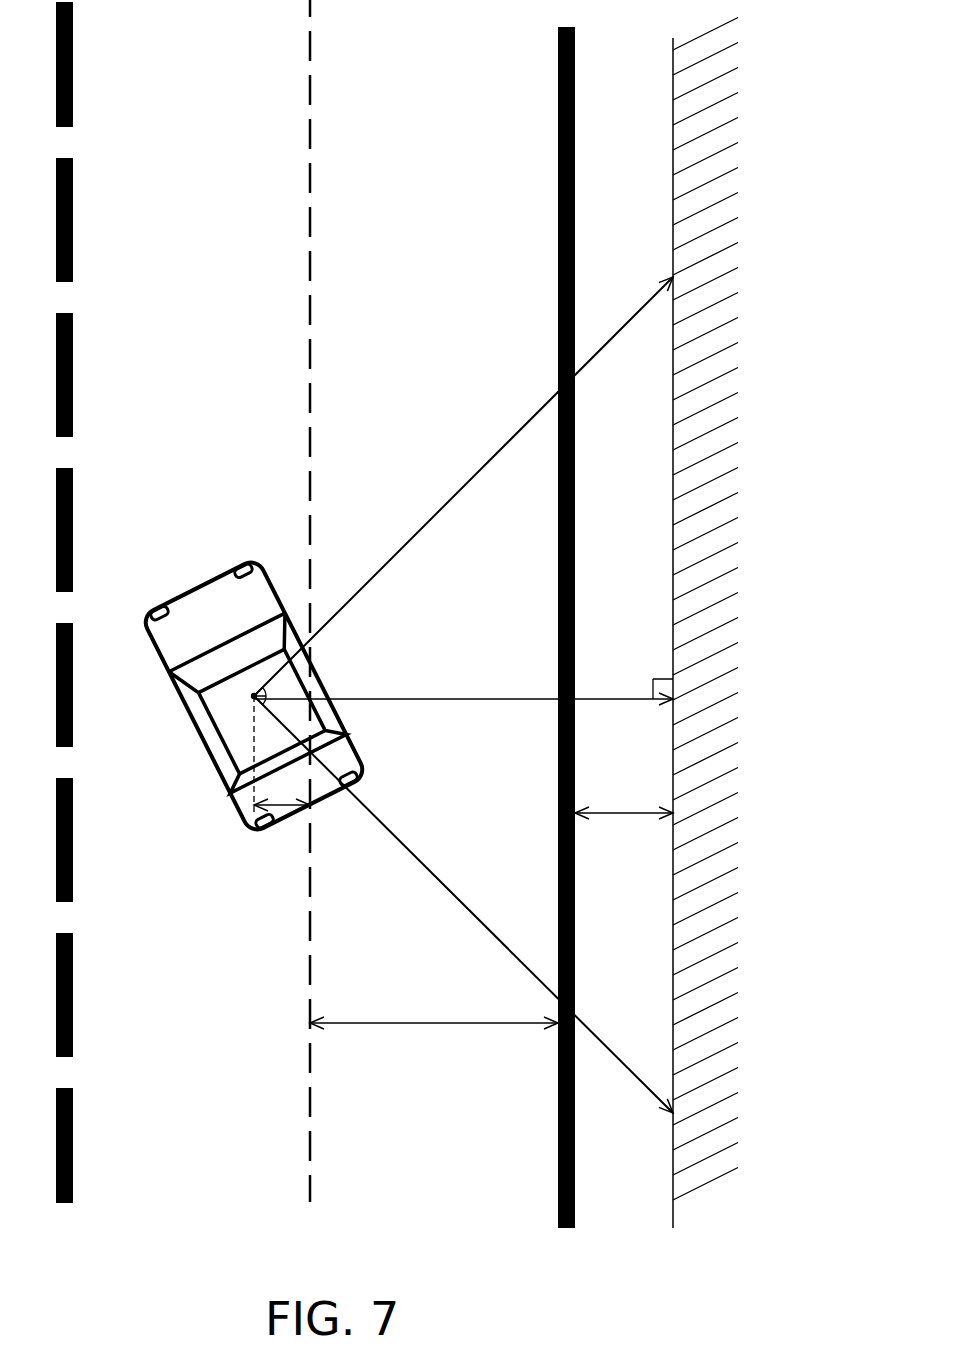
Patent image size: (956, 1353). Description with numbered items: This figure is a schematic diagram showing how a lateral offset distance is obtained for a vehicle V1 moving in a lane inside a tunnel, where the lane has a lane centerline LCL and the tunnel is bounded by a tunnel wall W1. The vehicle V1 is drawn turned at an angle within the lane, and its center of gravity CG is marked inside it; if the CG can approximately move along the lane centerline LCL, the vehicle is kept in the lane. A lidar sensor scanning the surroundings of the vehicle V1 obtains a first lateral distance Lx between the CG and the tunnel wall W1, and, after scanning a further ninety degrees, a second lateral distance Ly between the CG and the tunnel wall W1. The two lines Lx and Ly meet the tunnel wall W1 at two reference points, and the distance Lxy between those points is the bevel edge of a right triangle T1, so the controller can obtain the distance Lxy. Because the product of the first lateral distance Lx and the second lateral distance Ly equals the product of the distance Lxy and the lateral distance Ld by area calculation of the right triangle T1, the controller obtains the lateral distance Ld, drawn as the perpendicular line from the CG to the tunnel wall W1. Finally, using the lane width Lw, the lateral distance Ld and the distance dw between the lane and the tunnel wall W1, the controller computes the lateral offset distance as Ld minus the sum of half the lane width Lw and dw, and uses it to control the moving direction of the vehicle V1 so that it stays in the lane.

The vehicle V1 is at (155, 655).
The CG of the vehicle CG is at (254, 696).
The lane centerline LCL is at (310, 58).
The right triangle T1 is at (607, 928).
The tunnel wall W1 is at (673, 82).
The first lateral distance Lx is at (463, 486).
The second lateral distance Ly is at (463, 904).
The lateral distance Ld is at (463, 682).
The distance between two reference points Lxy is at (701, 713).
The distance between the lane and the tunnel wall dw is at (624, 831).
The lane width Lw is at (458, 1068).